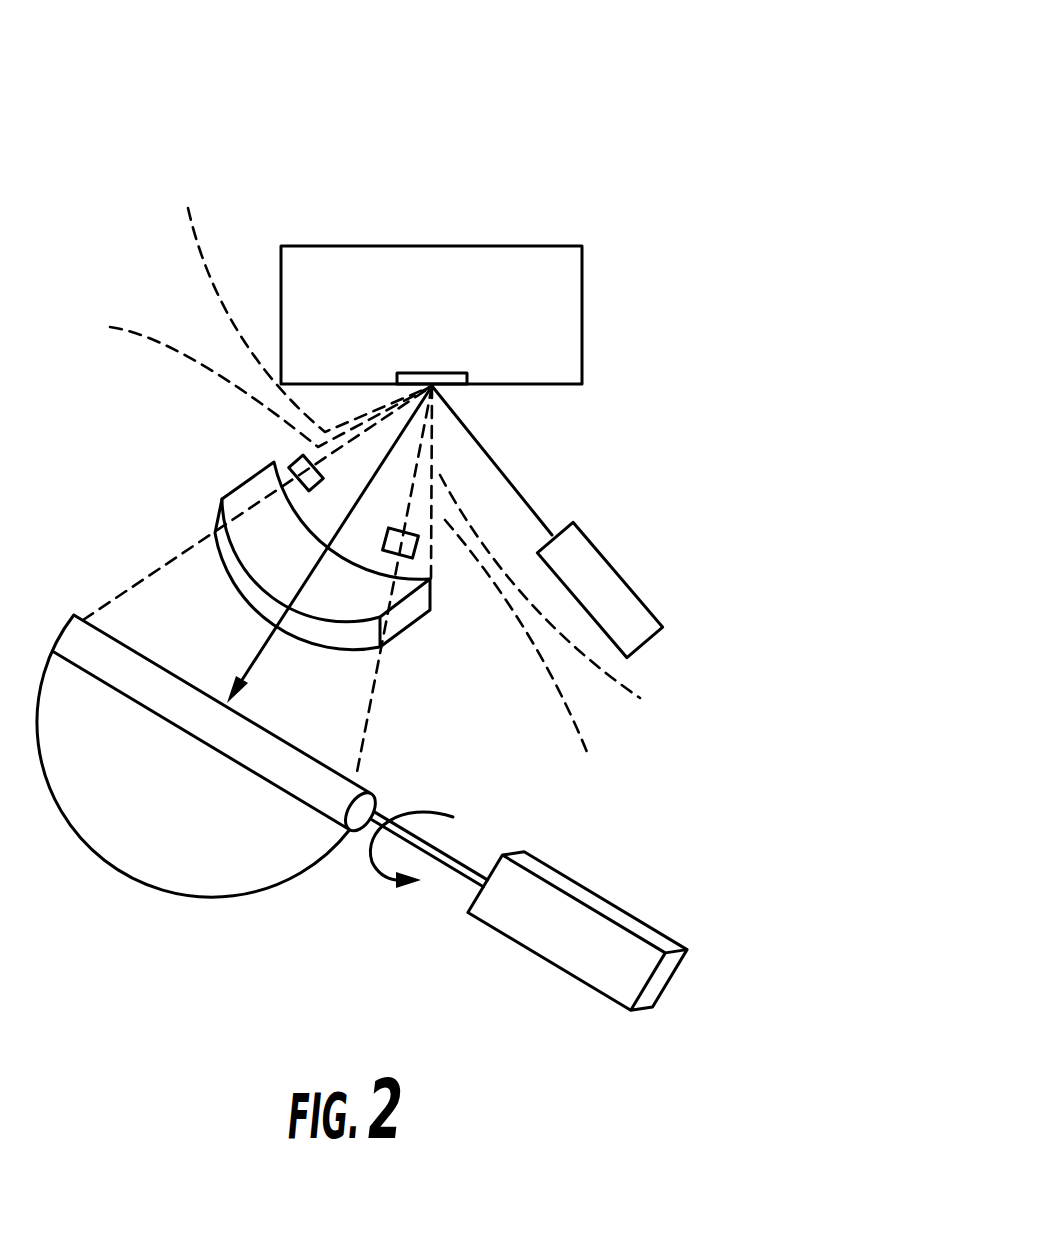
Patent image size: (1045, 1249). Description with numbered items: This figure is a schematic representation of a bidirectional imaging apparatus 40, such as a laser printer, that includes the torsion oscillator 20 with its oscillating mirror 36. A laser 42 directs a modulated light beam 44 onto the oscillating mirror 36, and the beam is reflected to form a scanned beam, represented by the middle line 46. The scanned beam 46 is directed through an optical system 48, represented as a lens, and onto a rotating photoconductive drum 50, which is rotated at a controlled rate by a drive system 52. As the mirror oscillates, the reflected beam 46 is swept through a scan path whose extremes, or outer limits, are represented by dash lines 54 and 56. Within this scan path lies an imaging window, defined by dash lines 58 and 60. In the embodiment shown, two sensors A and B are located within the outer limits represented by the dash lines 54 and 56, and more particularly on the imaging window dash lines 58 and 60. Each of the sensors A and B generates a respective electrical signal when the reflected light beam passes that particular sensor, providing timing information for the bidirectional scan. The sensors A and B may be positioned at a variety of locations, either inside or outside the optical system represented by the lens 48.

The torsion oscillator 20 is at (348, 247).
The oscillating mirror 36 is at (437, 389).
The bidirectional imaging apparatus 40 is at (862, 150).
The laser 42 is at (635, 590).
The modulated light beam 44 is at (517, 490).
The scanned beam 46 is at (262, 650).
The optical system 48 is at (236, 494).
The rotating photoconductive drum 50 is at (177, 732).
The drive system 52 is at (547, 962).
The dash line 54 is at (569, 599).
The dash line 56 is at (302, 295).
The dash line 58 is at (529, 665).
The dash line 60 is at (247, 372).
The sensor A is at (418, 545).
The sensor B is at (287, 458).